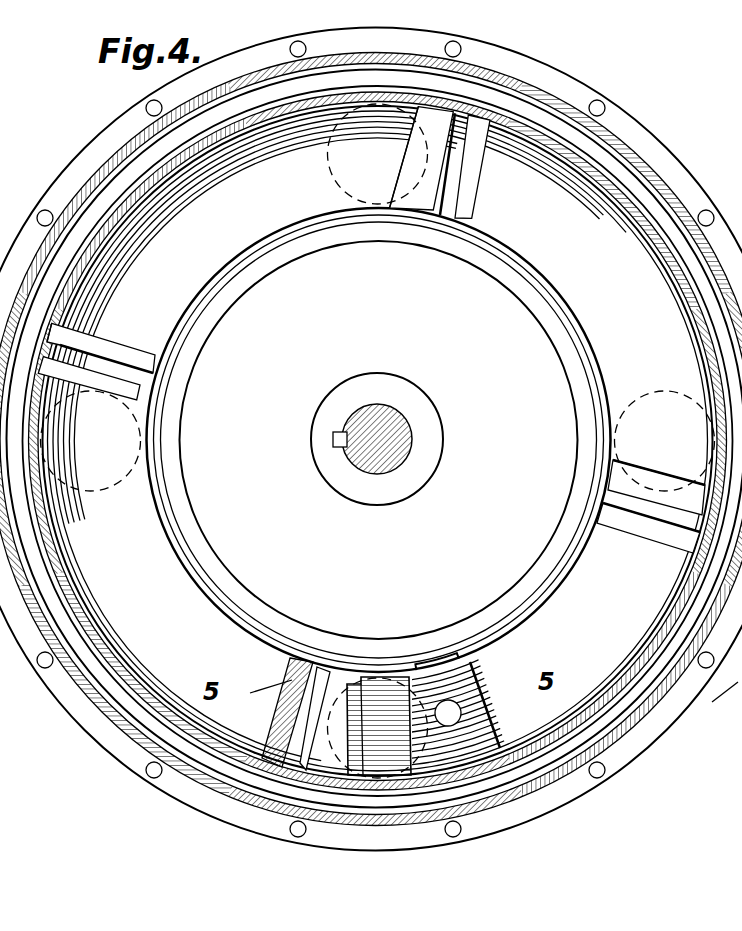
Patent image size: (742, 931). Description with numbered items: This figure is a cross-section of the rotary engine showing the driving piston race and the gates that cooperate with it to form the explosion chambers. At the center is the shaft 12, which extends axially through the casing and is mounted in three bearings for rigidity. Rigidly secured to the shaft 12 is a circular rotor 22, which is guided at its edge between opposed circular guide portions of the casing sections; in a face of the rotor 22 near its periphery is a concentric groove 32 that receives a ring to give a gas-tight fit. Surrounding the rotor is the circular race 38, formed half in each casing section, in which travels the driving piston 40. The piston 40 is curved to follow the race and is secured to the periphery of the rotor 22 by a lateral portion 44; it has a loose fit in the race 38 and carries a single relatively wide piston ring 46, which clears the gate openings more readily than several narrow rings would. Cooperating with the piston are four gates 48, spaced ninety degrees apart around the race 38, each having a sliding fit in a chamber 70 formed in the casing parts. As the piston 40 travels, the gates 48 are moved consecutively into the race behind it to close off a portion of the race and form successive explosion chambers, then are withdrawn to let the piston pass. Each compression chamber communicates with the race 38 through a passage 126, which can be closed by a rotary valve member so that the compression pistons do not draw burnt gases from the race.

The shaft 12 is at (398, 437).
The rotor 22 is at (228, 330).
The groove 32 is at (256, 263).
The race 38 is at (187, 615).
The driving piston 40 is at (462, 687).
The lateral portion 44 is at (430, 665).
The piston ring 46 is at (379, 726).
The gate 48 is at (465, 163).
The chamber 70 is at (450, 213).
The passage 126 is at (418, 190).